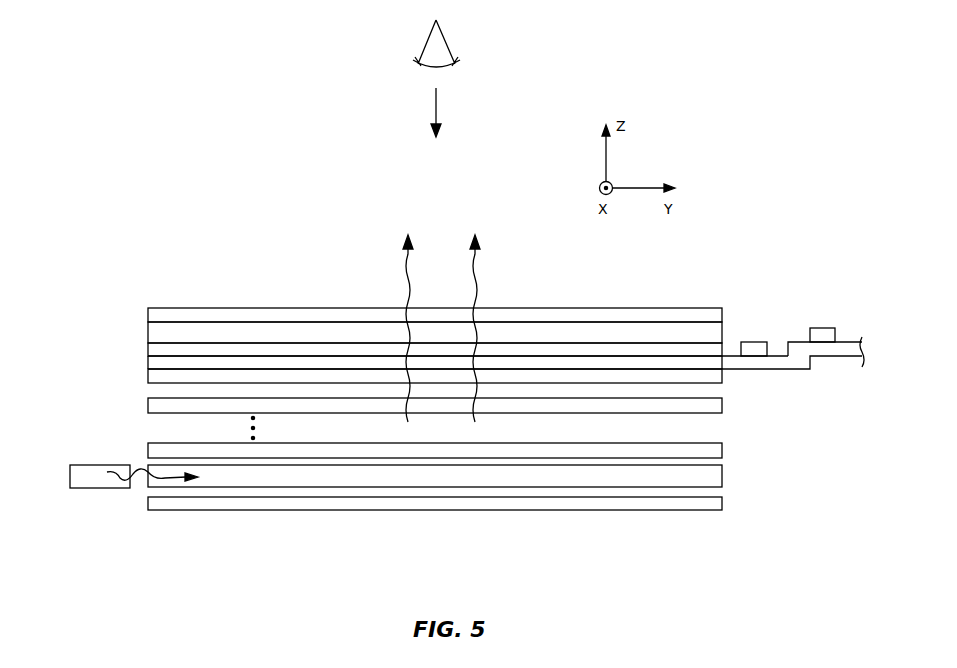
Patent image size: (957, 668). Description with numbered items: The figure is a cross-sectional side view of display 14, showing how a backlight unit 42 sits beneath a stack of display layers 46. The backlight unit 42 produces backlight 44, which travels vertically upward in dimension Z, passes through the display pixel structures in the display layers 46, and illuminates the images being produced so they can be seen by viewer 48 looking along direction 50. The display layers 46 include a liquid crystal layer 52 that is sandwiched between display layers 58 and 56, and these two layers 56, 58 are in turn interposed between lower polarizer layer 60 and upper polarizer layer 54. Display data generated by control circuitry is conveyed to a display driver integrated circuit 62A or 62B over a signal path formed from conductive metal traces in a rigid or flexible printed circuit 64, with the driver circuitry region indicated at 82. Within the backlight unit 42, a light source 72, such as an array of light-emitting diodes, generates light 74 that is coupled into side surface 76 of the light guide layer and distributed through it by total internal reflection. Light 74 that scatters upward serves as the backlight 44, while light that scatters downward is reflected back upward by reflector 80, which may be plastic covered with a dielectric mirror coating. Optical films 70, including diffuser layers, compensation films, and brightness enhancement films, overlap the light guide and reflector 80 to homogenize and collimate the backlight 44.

The display 14 is at (716, 246).
The backlight unit 42 is at (432, 478).
The backlight 44 is at (417, 282).
The display layers 46 is at (481, 325).
The viewer 48 is at (447, 38).
The direction 50 is at (437, 110).
The liquid crystal layer 52 is at (237, 350).
The upper polarizer layer 54 is at (170, 317).
The display layer 56 is at (197, 335).
The display layer 58 is at (270, 362).
The lower polarizer layer 60 is at (310, 378).
The display driver integrated circuit 62A is at (768, 344).
The display driver integrated circuit 62B is at (836, 334).
The printed circuit 64 is at (847, 356).
The optical films 70 is at (154, 452).
The light source 72 is at (70, 480).
The light 74 is at (116, 486).
The side surface 76 is at (146, 482).
The reflector 80 is at (314, 511).
The display driver circuitry 82 is at (787, 306).